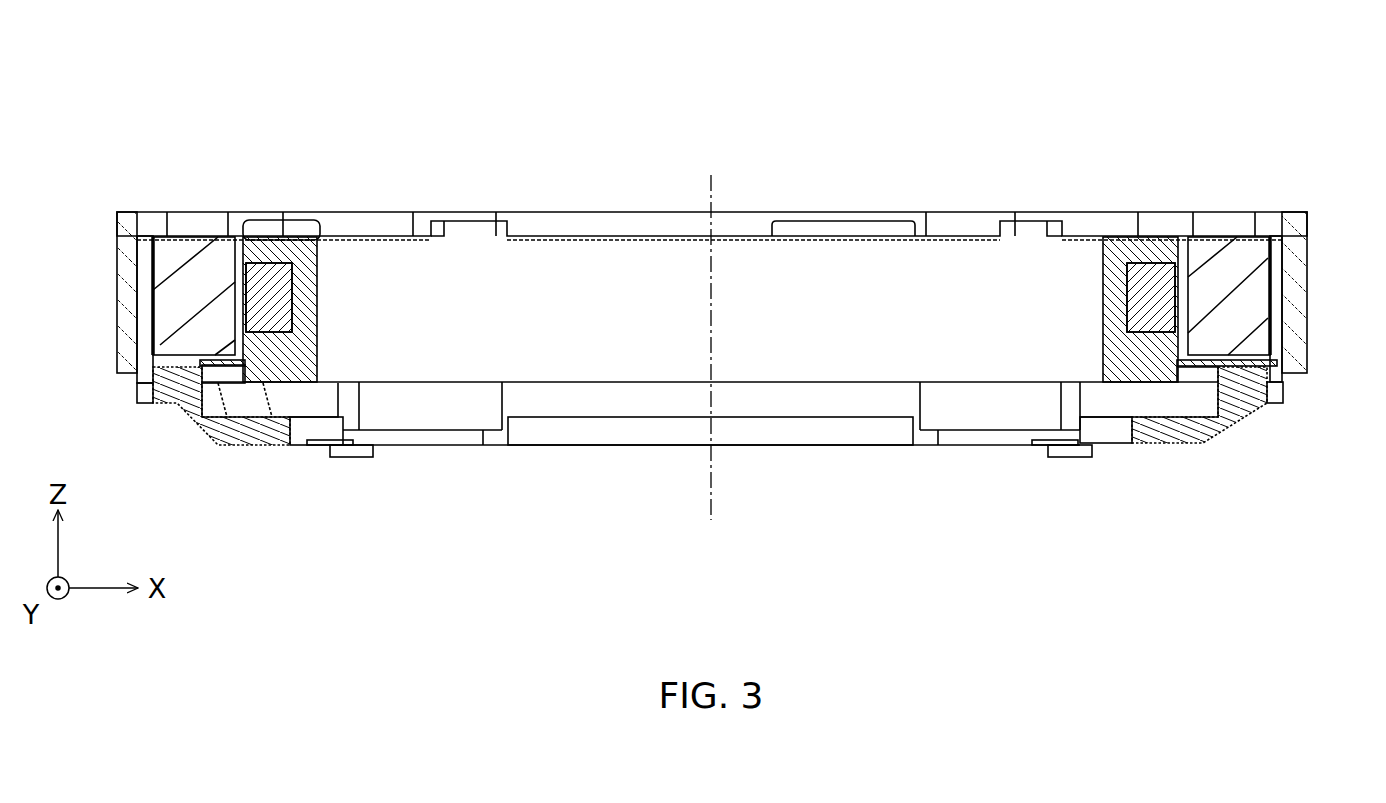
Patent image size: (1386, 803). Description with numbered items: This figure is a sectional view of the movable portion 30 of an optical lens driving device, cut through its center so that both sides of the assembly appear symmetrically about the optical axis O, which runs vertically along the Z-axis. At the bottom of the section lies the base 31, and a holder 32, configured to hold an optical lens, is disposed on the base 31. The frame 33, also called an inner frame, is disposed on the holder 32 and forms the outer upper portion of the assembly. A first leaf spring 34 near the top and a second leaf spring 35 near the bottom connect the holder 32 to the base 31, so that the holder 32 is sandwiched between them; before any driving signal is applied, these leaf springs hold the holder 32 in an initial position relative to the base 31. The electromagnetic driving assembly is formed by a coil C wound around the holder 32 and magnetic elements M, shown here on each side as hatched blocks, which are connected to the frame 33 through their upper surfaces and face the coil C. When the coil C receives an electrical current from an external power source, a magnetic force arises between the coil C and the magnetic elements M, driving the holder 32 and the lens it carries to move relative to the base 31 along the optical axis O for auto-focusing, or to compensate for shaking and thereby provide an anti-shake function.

The movable portion 30 is at (83, 115).
The base 31 is at (243, 432).
The holder 32 is at (1160, 250).
The frame 33 is at (127, 238).
The first leaf spring 34 is at (253, 240).
The second leaf spring 35 is at (1190, 368).
The magnetic element M is at (200, 275).
The coil C is at (273, 315).
The optical axis O is at (710, 328).